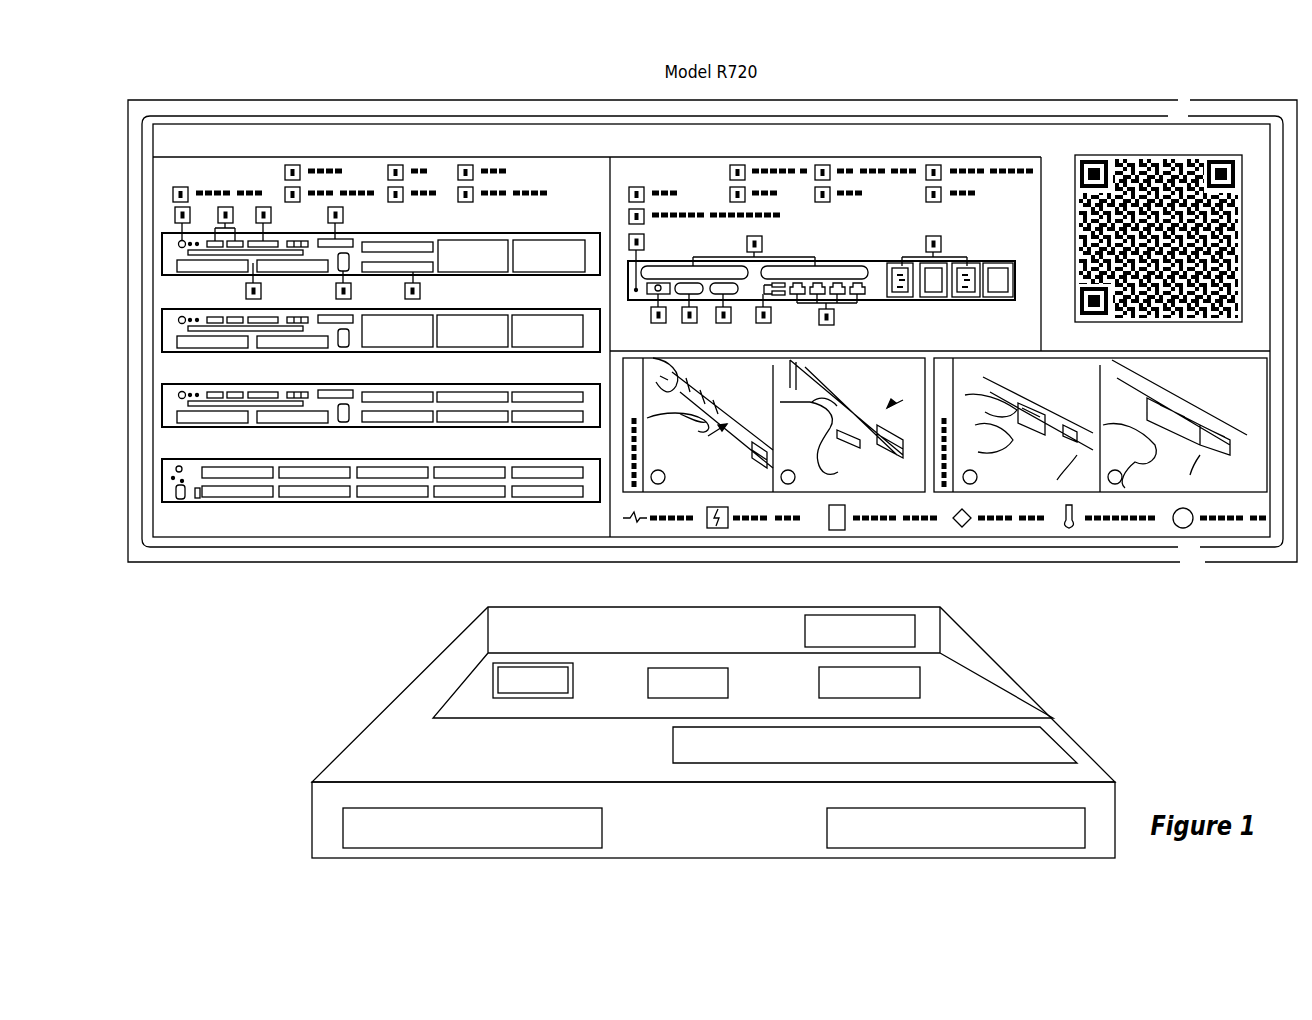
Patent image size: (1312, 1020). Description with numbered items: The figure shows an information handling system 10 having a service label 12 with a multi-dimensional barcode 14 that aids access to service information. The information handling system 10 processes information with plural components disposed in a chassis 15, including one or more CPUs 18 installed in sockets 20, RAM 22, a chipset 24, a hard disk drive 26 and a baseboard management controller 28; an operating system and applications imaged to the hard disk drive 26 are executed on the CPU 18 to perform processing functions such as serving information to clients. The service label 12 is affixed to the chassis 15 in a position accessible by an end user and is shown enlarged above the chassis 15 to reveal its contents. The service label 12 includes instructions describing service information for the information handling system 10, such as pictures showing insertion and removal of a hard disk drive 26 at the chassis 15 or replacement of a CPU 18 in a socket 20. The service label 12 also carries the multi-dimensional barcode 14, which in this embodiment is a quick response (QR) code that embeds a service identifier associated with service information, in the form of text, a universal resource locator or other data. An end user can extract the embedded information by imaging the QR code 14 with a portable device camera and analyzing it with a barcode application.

The information handling system 10 is at (625, 727).
The service label 12 is at (712, 399).
The multi-dimensional barcode 14 is at (1175, 191).
The chassis 15 is at (217, 795).
The CPU 18 is at (573, 681).
The socket 20 is at (511, 647).
The RAM 22 is at (728, 684).
The chipset 24 is at (912, 688).
The hard disk drive 26 is at (602, 830).
The baseboard management controller 28 is at (805, 632).